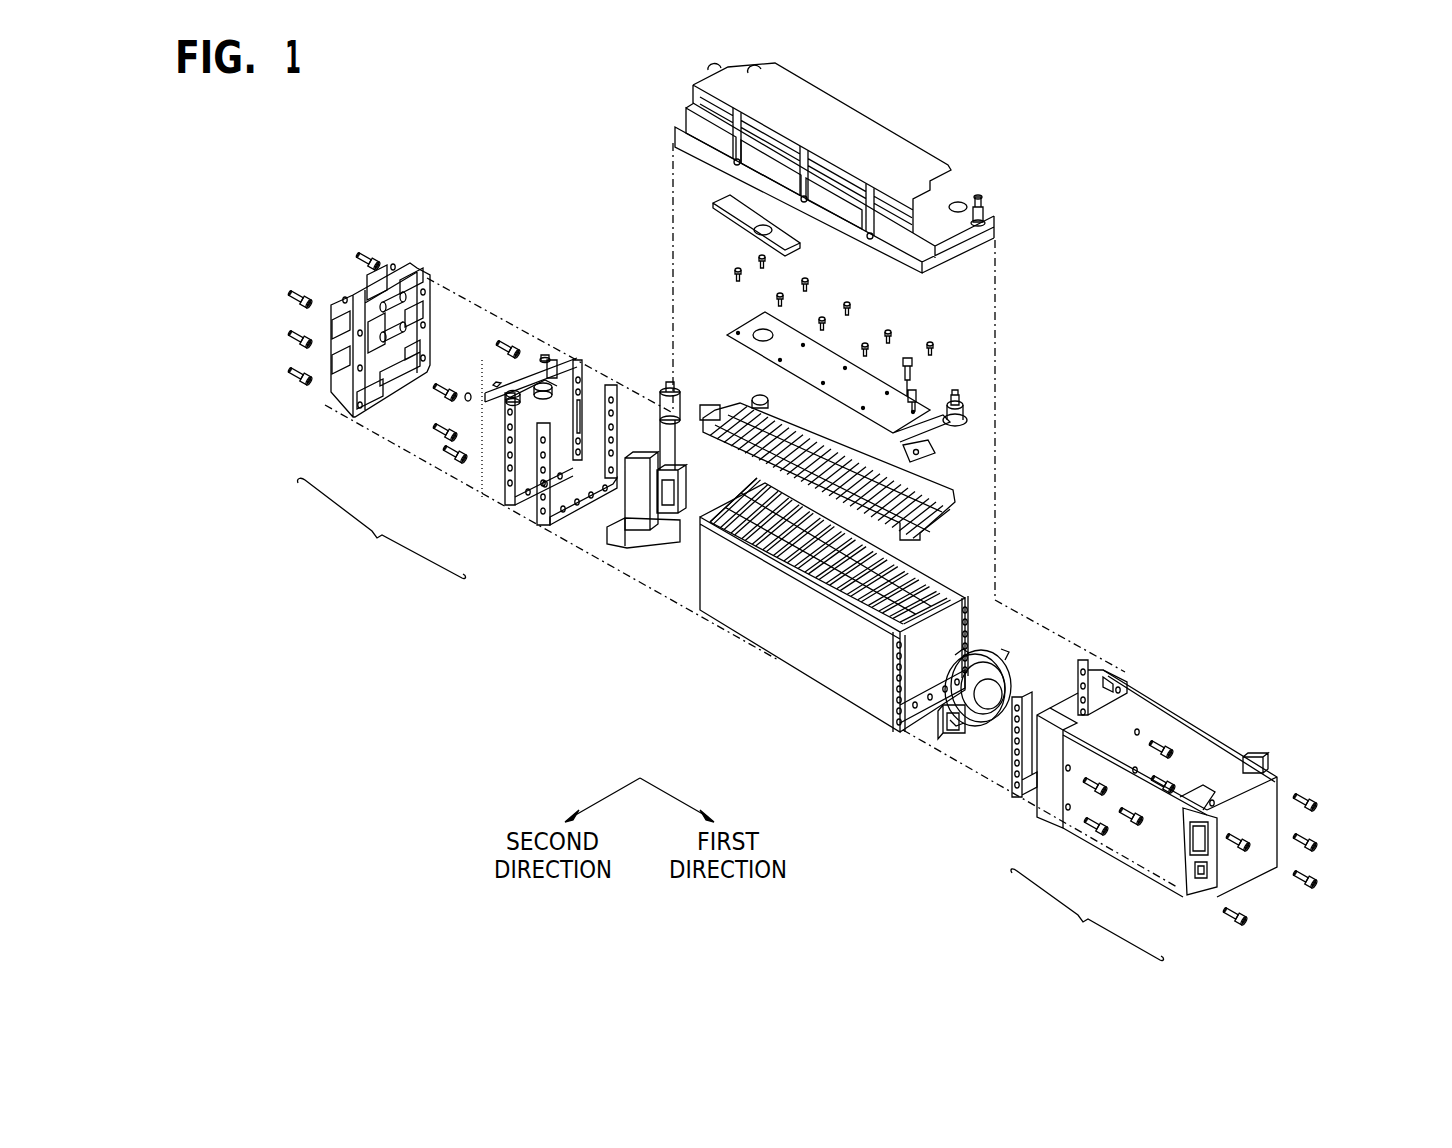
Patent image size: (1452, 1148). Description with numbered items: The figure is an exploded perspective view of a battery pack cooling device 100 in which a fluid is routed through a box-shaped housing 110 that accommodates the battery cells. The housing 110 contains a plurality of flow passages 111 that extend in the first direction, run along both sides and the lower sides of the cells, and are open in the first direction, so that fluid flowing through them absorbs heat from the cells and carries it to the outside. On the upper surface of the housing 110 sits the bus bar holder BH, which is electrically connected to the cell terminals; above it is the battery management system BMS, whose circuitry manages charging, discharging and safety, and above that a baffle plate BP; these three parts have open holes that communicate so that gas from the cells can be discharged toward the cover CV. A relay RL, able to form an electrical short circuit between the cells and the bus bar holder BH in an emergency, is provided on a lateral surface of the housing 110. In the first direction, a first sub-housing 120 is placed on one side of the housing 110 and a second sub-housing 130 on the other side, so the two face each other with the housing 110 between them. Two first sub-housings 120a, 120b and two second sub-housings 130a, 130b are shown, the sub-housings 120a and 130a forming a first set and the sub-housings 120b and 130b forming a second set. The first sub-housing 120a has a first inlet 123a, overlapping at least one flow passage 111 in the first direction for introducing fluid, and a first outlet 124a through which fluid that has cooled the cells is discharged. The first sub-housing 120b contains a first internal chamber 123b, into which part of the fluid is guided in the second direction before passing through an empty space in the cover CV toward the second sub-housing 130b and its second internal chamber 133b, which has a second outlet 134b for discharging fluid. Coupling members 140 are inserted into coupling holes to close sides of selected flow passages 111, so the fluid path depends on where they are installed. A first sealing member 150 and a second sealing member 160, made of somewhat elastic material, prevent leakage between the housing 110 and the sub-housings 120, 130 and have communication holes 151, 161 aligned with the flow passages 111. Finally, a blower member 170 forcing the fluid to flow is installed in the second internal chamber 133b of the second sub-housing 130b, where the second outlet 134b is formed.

The battery pack cooling device 100 is at (1216, 559).
The housing 110 is at (773, 648).
The flow passages 111 is at (903, 700).
The first sub-housing 120 is at (457, 418).
The first sub-housing 120a is at (490, 492).
The first sub-housing 120b is at (347, 390).
The first inlet 123a is at (468, 397).
The first internal chamber 123b is at (385, 348).
The first outlet 124a is at (545, 355).
The second sub-housing 130 is at (1149, 816).
The second sub-housing 130a is at (1050, 812).
The second sub-housing 130b is at (1180, 892).
The second internal chamber 133b is at (1230, 783).
The second outlet 134b is at (1200, 895).
The coupling members 140 is at (507, 350).
The first sealing member 150 is at (553, 520).
The communication holes 151 is at (582, 510).
The second sealing member 160 is at (1012, 782).
The communication holes 161 is at (1087, 682).
The blower member 170 is at (957, 735).
The cover CV is at (880, 137).
The baffle plate BP is at (713, 203).
The battery management system BMS is at (740, 323).
The bus bar holder BH is at (740, 403).
The relay RL is at (635, 535).